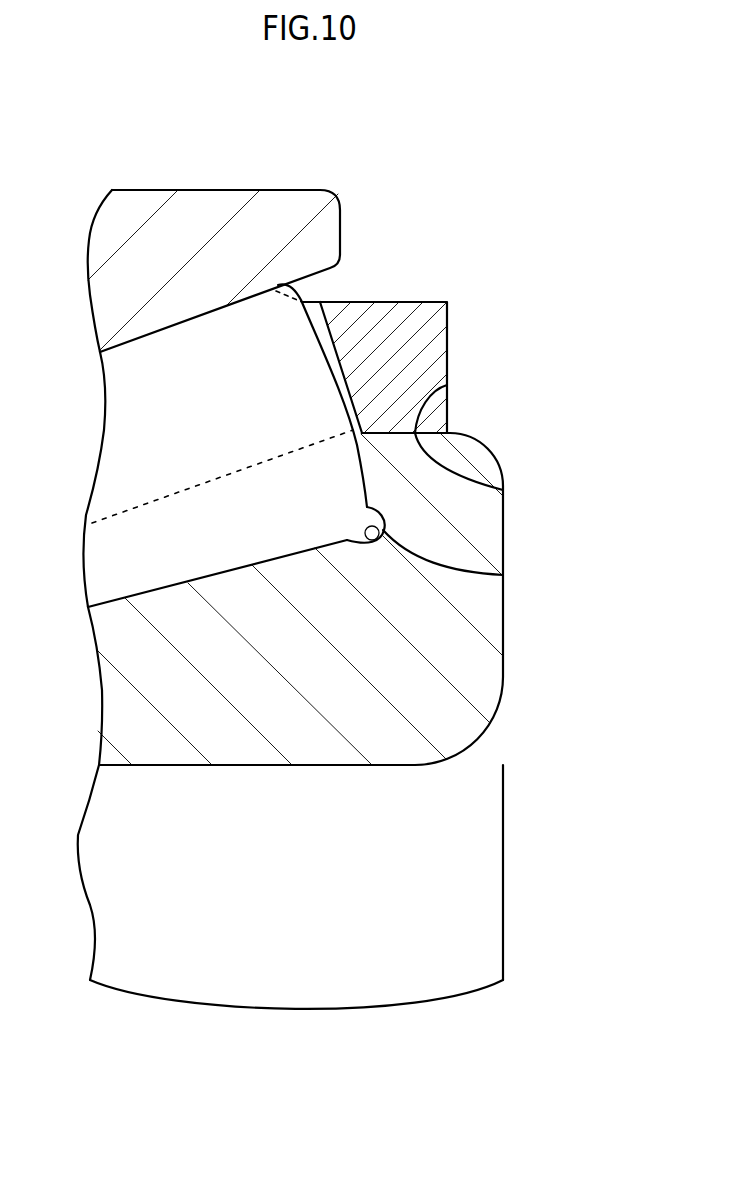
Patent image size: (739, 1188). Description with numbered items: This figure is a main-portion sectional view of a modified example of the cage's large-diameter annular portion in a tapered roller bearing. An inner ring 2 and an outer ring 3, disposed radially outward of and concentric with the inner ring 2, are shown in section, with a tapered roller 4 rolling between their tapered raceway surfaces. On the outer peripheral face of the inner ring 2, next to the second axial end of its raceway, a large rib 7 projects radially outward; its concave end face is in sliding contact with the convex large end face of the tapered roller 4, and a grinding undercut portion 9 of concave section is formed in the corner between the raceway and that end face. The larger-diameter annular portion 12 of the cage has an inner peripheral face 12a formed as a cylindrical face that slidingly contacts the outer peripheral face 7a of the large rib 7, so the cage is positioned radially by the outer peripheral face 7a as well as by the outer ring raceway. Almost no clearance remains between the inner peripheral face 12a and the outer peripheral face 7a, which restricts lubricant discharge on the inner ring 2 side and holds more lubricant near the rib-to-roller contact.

The inner ring 2 is at (262, 765).
The outer ring 3 is at (275, 205).
The tapered roller 4 is at (128, 438).
The large rib 7 is at (443, 622).
The outer peripheral face of the large rib 7a is at (447, 388).
The grinding undercut portion 9 is at (503, 575).
The larger-diameter annular portion 12 is at (413, 302).
The inner peripheral face 12a is at (503, 490).